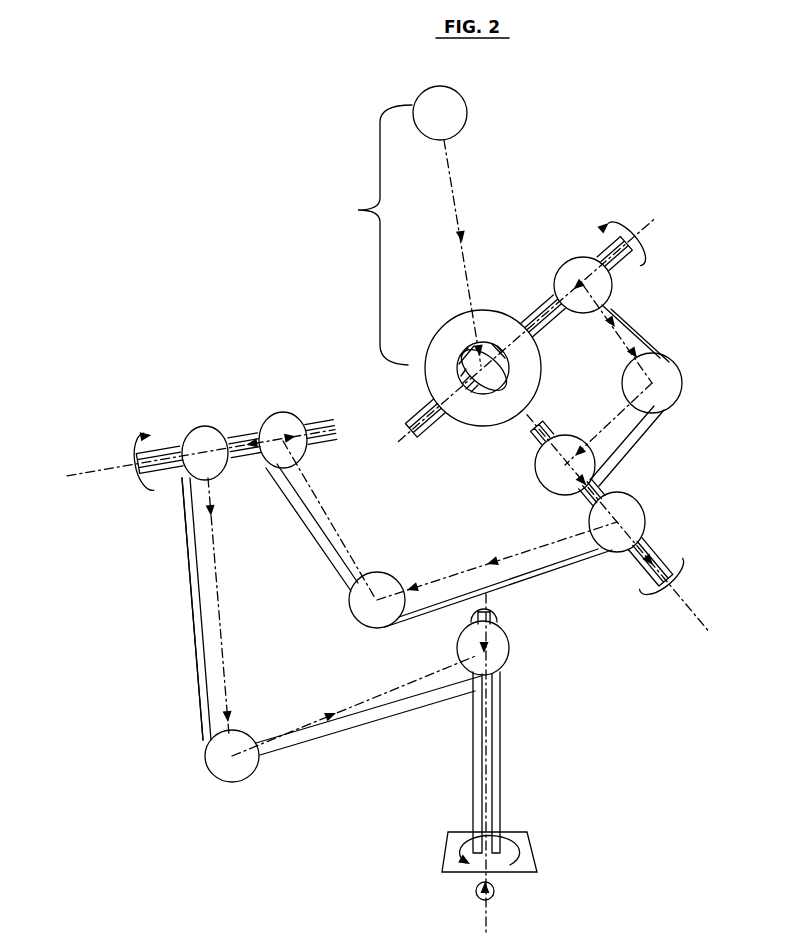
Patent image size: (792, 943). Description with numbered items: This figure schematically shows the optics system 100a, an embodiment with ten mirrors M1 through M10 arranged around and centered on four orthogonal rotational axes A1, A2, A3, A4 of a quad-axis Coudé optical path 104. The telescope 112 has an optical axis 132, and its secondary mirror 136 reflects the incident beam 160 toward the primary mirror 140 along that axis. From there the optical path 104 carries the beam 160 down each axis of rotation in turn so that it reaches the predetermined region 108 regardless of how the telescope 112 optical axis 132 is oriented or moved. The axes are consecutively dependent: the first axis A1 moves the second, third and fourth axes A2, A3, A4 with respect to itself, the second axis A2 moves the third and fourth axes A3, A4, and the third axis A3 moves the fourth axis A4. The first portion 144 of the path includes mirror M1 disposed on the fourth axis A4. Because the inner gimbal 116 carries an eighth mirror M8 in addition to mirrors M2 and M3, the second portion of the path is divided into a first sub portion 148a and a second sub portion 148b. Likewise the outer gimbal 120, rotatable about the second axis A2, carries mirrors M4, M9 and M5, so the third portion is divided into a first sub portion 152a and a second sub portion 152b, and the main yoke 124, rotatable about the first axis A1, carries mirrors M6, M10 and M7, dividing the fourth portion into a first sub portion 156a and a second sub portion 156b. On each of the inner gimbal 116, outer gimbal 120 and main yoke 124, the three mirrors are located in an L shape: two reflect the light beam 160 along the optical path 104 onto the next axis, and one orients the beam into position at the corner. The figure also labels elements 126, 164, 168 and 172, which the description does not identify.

The optics system 100a is at (612, 128).
The optical path 104 is at (200, 548).
The predetermined region 108 is at (476, 886).
The telescope 112 is at (358, 210).
The inner gimbal 116 is at (636, 428).
The outer gimbal 120 is at (500, 588).
The main yoke 124 is at (206, 700).
The base 126 is at (530, 850).
The optical axis 132 is at (464, 253).
The secondary mirror 136 is at (467, 113).
The primary mirror 140 is at (498, 417).
The first portion 144 is at (528, 320).
The first sub portion 148a is at (632, 339).
The second sub portion 148b is at (617, 432).
The first sub portion 152a is at (526, 553).
The second sub portion 152b is at (300, 475).
The first sub portion 156a is at (224, 632).
The second sub portion 156b is at (372, 702).
The incident beam 160 is at (468, 272).
The shaft 164 is at (582, 506).
The shaft 168 is at (252, 440).
The post 172 is at (488, 740).
The first axis A1 is at (488, 906).
The second axis A2 is at (92, 479).
The third axis A3 is at (700, 625).
The fourth axis A4 is at (660, 218).
The first mirror M1 is at (456, 358).
The second mirror M2 is at (606, 288).
The third mirror M3 is at (542, 462).
The fourth mirror M4 is at (630, 523).
The fifth mirror M5 is at (286, 422).
The sixth mirror M6 is at (206, 446).
The seventh mirror M7 is at (508, 660).
The eighth mirror M8 is at (670, 377).
The ninth mirror M9 is at (368, 604).
The tenth mirror M10 is at (230, 762).